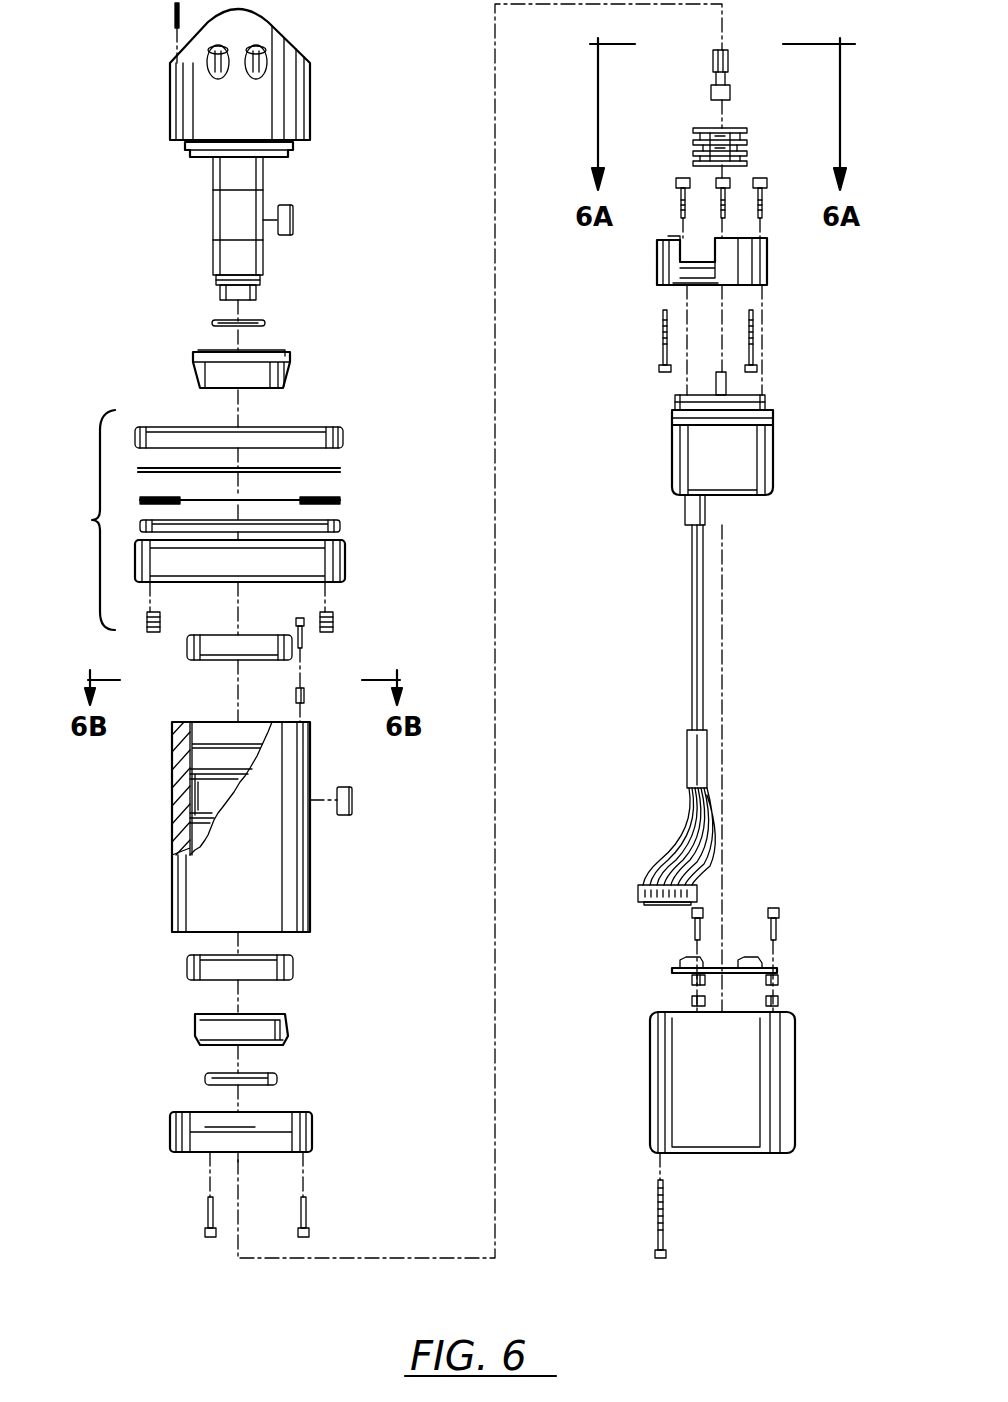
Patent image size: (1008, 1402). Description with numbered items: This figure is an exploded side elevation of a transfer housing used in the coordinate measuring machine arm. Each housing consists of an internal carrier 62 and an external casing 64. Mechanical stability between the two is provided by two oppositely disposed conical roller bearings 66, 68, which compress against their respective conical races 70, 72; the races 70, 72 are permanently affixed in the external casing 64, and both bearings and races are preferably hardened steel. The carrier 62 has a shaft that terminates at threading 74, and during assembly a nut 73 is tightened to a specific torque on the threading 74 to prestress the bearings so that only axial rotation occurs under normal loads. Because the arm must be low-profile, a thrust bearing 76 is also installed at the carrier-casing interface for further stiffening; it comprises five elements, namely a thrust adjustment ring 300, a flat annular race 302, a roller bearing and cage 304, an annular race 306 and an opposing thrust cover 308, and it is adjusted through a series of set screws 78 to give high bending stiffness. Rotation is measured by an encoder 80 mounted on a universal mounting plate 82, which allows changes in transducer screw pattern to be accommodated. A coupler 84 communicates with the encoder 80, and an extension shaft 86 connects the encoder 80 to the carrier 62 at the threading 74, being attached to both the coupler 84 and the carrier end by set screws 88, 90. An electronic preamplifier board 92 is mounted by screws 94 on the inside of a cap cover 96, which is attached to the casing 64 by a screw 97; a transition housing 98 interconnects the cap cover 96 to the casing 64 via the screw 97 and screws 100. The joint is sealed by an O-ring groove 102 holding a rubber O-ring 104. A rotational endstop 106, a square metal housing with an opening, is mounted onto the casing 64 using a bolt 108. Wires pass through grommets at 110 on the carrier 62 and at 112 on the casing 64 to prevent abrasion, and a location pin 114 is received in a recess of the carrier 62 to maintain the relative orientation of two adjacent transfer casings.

The location pin 114 is at (175, 12).
The internal carrier 62 is at (170, 99).
The O-ring groove 102 is at (290, 148).
The threading 74 is at (215, 283).
The grommet 112 is at (288, 205).
The O-ring 104 is at (212, 323).
The conical roller bearing 66 is at (194, 372).
The thrust bearing 76 is at (237, 521).
The thrust cover 308 is at (345, 438).
The annular race 306 is at (343, 470).
The roller bearing and cage 304 is at (343, 499).
The flat annular race 302 is at (345, 527).
The thrust adjustment ring 300 is at (347, 575).
The set screws 78 is at (160, 618).
The conical race 72 is at (188, 647).
The bolt 108 is at (304, 638).
The rotational endstop 106 is at (305, 696).
The external casing 64 is at (172, 806).
The grommet 110 is at (344, 787).
The conical race 70 is at (188, 968).
The conical roller bearing 68 is at (196, 1028).
The nut 73 is at (205, 1078).
The transition housing 98 is at (170, 1130).
The screws 100 is at (208, 1218).
The extension shaft 86 is at (712, 62).
The coupler 84 is at (703, 128).
The set screws 90 is at (678, 180).
The universal mounting plate 82 is at (768, 260).
The set screws 88 is at (661, 328).
The encoder 80 is at (775, 472).
The screws 94 is at (695, 930).
The electronic preamplifier board 92 is at (685, 970).
The cap cover 96 is at (650, 1078).
The screw 97 is at (664, 1241).